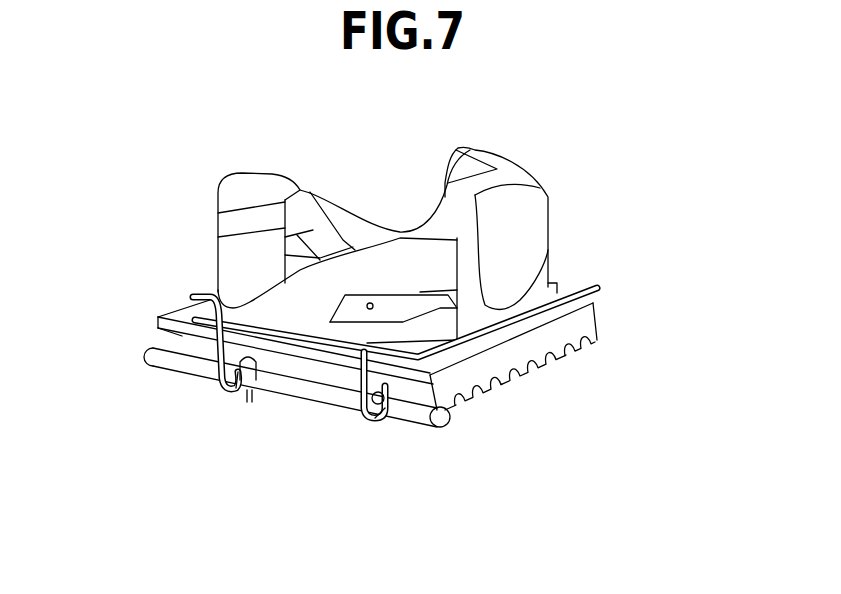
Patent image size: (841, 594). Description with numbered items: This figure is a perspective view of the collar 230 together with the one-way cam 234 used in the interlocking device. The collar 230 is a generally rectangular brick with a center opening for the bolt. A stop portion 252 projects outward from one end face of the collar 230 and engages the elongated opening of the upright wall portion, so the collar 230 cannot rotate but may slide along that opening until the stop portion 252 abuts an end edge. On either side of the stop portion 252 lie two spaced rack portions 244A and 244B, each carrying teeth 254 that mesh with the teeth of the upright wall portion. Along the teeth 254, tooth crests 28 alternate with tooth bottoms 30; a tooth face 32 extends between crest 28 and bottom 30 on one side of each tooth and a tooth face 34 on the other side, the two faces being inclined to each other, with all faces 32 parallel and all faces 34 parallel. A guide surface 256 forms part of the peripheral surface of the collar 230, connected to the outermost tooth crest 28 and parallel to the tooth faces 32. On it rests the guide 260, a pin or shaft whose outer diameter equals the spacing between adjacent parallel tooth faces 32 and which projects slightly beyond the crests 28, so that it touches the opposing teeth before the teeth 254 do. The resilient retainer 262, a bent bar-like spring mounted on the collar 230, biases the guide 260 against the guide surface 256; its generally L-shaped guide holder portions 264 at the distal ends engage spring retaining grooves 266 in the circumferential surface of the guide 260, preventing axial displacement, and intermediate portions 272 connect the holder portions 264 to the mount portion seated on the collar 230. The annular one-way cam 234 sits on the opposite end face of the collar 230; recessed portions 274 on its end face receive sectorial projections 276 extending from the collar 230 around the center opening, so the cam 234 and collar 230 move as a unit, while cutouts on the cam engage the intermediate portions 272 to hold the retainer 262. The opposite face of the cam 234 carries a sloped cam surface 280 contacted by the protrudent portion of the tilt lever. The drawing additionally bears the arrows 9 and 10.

The view direction arrow 9 is at (451, 486).
The adjustment assembly 10 is at (672, 385).
The tooth crest 28 is at (540, 365).
The tooth bottom 30 is at (568, 363).
The tooth face 32 is at (457, 413).
The tooth face 34 is at (528, 387).
The collar 230 is at (180, 305).
The one-way cam 234 is at (325, 197).
The rack portion 244A is at (163, 333).
The rack portion 244B is at (600, 318).
The stop portion 252 is at (266, 415).
The teeth 254 is at (547, 396).
The guide surface 256 is at (160, 317).
The guide 260 is at (303, 395).
The resilient retainer 262 is at (600, 290).
The guide holder portion 264 is at (222, 387).
The spring retaining groove 266 is at (252, 400).
The intermediate portion 272 is at (218, 288).
The recessed portion 274 is at (378, 300).
The sectorial projection 276 is at (407, 303).
The sloped cam surface 280 is at (528, 203).